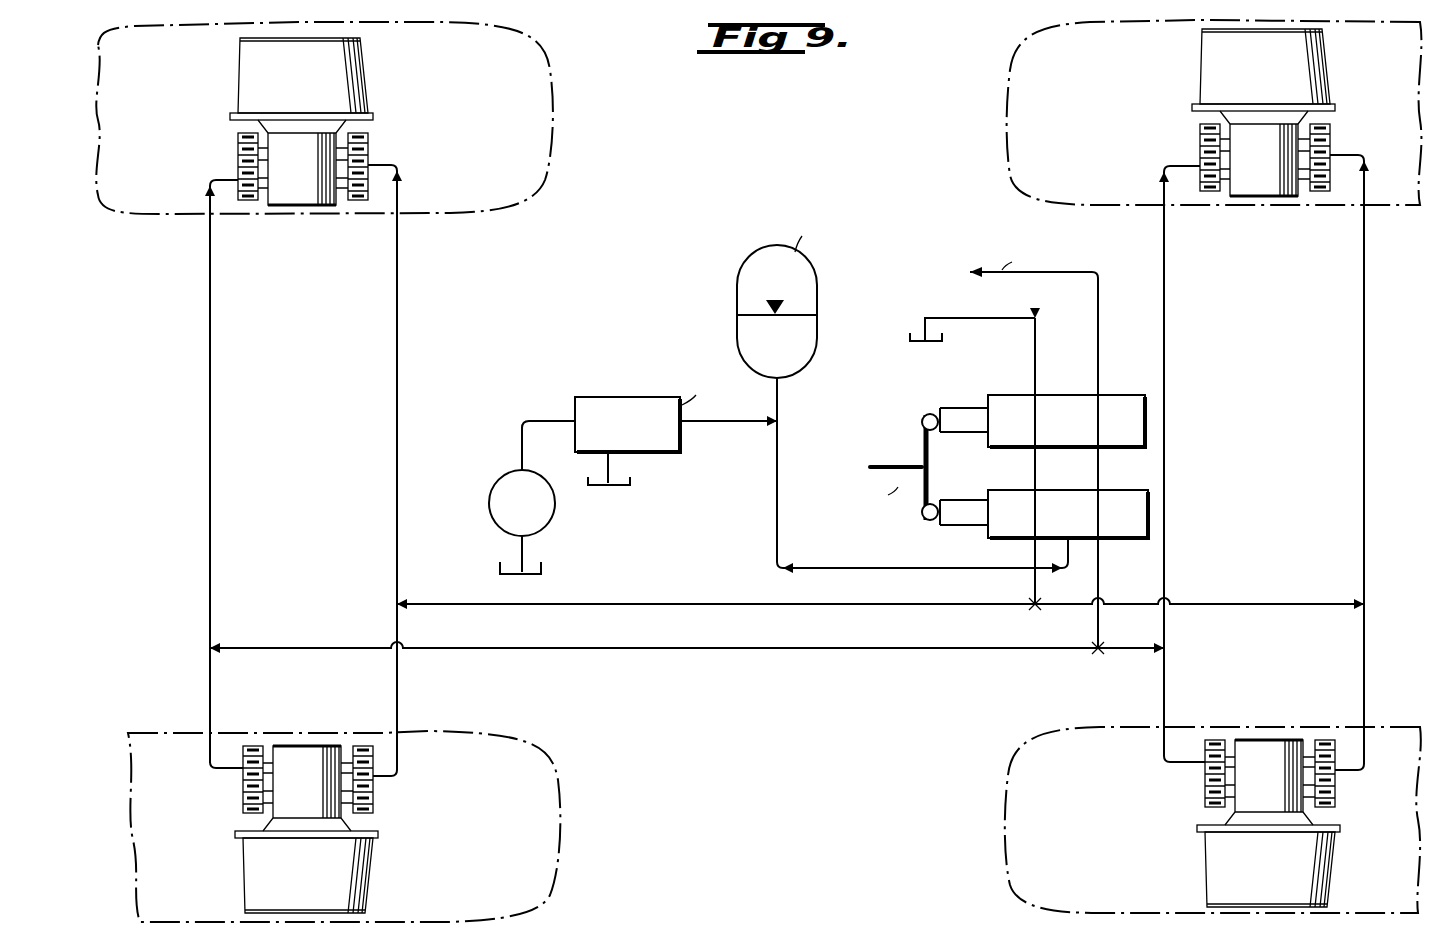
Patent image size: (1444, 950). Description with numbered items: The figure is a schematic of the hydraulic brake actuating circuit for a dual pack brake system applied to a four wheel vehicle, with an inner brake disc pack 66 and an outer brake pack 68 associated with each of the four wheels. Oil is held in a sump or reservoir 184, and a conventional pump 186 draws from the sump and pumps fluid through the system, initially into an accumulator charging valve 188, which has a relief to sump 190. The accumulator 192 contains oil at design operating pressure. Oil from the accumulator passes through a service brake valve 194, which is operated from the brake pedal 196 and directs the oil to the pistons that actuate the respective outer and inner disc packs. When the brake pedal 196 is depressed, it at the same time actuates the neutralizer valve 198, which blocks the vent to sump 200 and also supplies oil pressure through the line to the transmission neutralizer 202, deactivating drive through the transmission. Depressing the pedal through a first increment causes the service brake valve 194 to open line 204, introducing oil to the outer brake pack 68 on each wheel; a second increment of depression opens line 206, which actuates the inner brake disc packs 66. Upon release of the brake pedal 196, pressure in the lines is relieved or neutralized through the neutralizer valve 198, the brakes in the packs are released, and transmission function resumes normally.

The inner brake disc pack 66 is at (357, 200).
The outer brake pack 68 is at (1208, 795).
The oil sump or reservoir 184 is at (530, 565).
The pump 186 is at (495, 486).
The accumulator charging valve 188 is at (672, 437).
The relief to sump 190 is at (620, 476).
The accumulator 192 is at (745, 281).
The service brake valve 194 is at (1000, 535).
The brake pedal 196 is at (860, 468).
The neutralizer valve 198 is at (1005, 395).
The vent to sump 200 is at (908, 340).
The line to the transmission neutralizer 202 is at (985, 268).
The line 204 is at (1098, 580).
The line 206 is at (1035, 590).